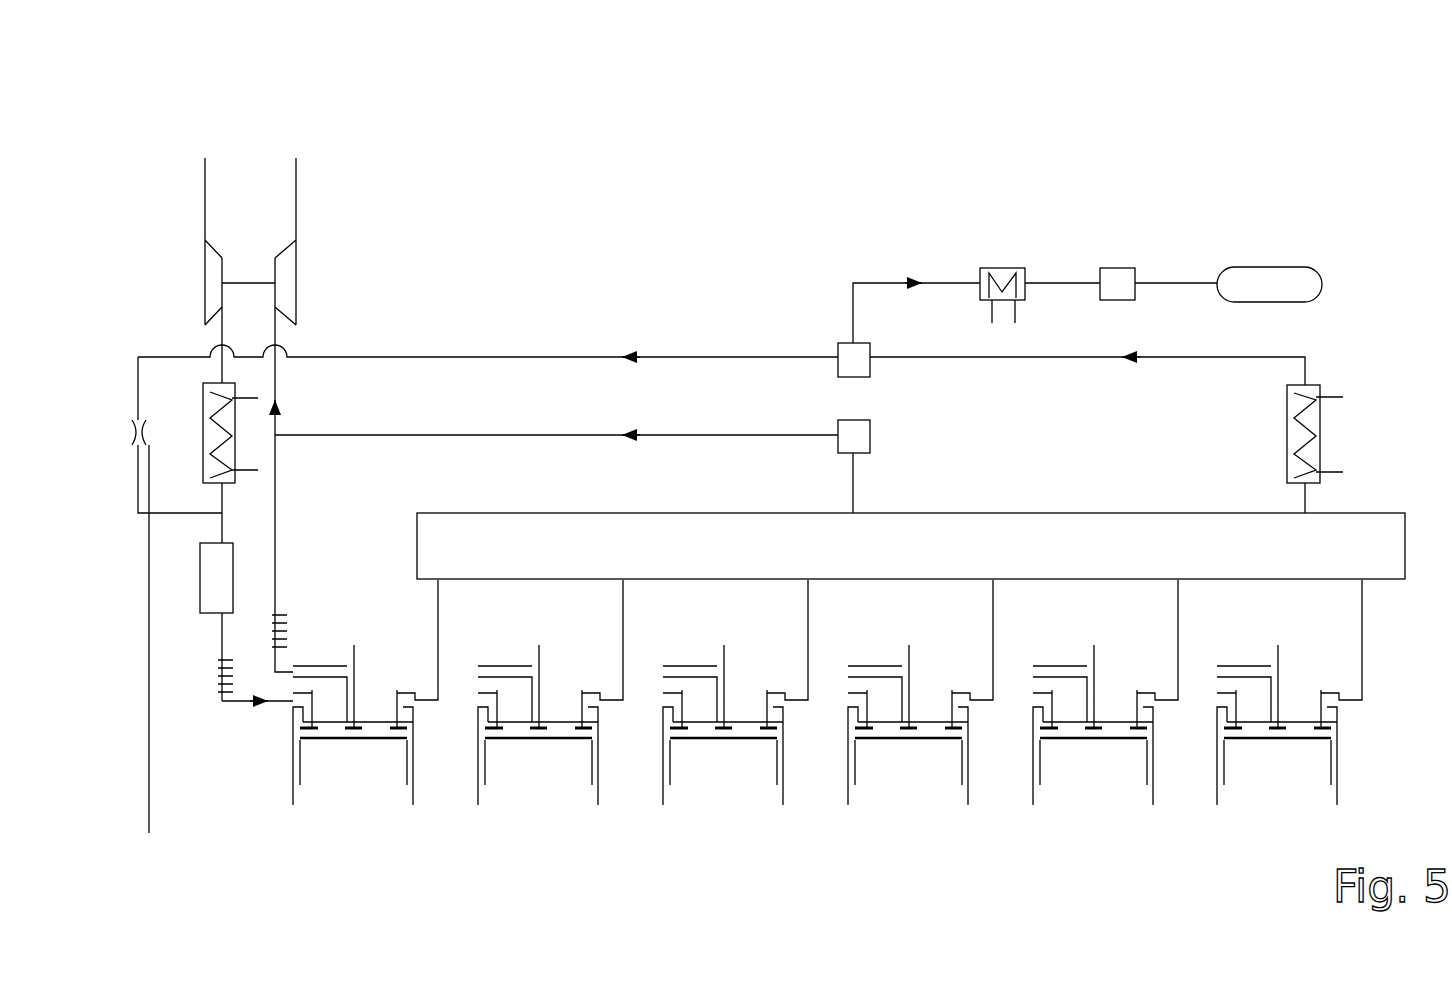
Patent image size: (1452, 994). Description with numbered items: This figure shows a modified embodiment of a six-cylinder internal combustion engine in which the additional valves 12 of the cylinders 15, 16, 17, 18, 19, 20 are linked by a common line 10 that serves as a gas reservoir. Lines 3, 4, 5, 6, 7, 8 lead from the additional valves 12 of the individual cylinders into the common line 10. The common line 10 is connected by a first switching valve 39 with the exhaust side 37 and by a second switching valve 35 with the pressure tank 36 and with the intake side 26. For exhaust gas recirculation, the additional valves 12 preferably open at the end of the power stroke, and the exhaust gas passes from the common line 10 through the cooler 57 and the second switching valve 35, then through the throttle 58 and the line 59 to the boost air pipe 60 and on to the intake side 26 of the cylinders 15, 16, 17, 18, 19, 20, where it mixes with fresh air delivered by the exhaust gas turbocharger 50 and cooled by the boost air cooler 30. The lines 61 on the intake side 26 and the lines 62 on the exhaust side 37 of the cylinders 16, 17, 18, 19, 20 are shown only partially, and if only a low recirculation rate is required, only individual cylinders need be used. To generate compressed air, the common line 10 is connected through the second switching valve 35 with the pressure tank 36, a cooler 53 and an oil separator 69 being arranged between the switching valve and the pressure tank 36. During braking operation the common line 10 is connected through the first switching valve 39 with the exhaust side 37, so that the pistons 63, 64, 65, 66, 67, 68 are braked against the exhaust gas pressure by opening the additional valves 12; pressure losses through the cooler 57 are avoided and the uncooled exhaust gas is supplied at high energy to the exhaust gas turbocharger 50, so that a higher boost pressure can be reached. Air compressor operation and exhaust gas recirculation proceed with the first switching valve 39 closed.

The line 3 is at (423, 705).
The line 4 is at (622, 702).
The line 5 is at (804, 702).
The line 6 is at (990, 702).
The line 7 is at (1173, 702).
The line 8 is at (1360, 702).
The common line 10 is at (530, 535).
The additional valve 12 is at (398, 690).
The cylinder 15 is at (293, 775).
The cylinder 16 is at (478, 775).
The cylinder 17 is at (668, 745).
The cylinder 18 is at (852, 745).
The cylinder 19 is at (1037, 745).
The cylinder 20 is at (1220, 745).
The intake side 26 is at (284, 714).
The boost air cooler 30 is at (223, 413).
The second switching valve 35 is at (853, 357).
The pressure tank 36 is at (1280, 283).
The exhaust side 37 is at (309, 654).
The first switching valve 39 is at (855, 435).
The exhaust gas turbocharger 50 is at (311, 264).
The cooler 53 is at (1008, 283).
The cooler 57 is at (1303, 415).
The throttle 58 is at (151, 645).
The line 59 is at (221, 497).
The boost air pipe 60 is at (217, 575).
The lines on the intake side 61 is at (237, 654).
The lines on the exhaust side 62 is at (291, 628).
The piston 63 is at (333, 740).
The piston 64 is at (528, 740).
The piston 65 is at (718, 742).
The piston 66 is at (898, 742).
The piston 67 is at (1068, 742).
The piston 68 is at (1258, 742).
The oil separator 69 is at (1113, 283).